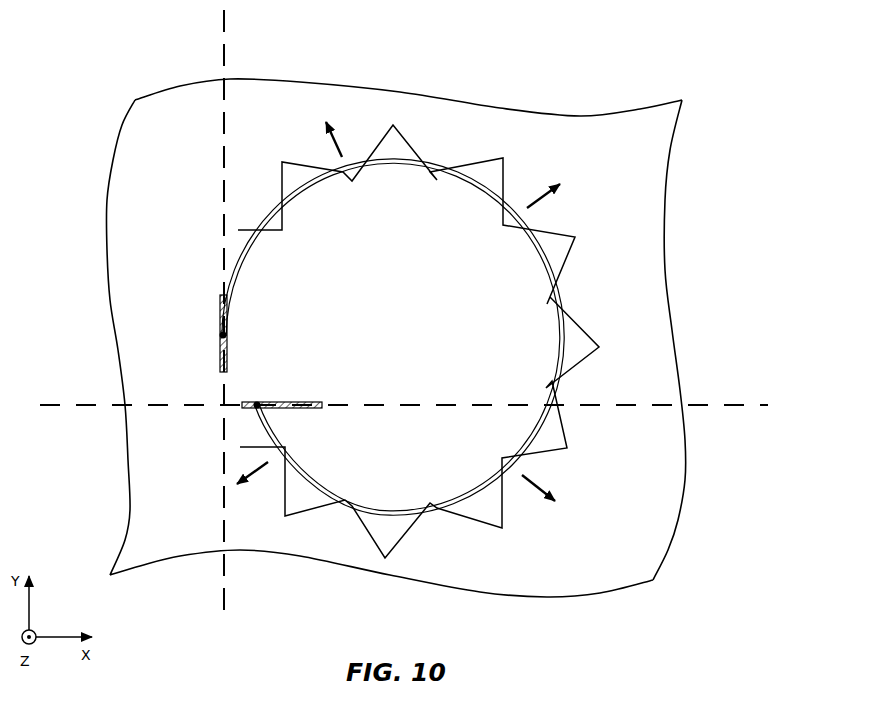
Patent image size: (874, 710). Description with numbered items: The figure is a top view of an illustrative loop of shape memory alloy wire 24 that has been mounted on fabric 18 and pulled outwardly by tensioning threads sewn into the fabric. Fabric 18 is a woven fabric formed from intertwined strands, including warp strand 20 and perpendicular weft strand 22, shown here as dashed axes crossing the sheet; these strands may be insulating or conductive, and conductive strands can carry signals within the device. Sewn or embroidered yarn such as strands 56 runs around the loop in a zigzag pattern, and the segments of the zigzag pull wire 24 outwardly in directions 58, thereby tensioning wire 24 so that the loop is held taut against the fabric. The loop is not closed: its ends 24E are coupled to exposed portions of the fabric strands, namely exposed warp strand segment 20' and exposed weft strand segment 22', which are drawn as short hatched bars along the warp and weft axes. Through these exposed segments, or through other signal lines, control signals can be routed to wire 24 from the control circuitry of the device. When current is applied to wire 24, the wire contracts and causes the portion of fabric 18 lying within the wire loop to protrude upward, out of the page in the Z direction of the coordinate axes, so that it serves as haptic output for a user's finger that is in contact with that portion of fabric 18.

The fabric 18 is at (632, 193).
The warp strand 20 is at (250, 316).
The exposed warp strand segment 20' is at (202, 333).
The weft strand 22 is at (404, 433).
The exposed weft strand segment 22' is at (282, 434).
The shape memory alloy wire 24 is at (560, 300).
The ends of wire 24E is at (225, 336).
The strands 56 is at (568, 257).
The directions 58 is at (336, 137).